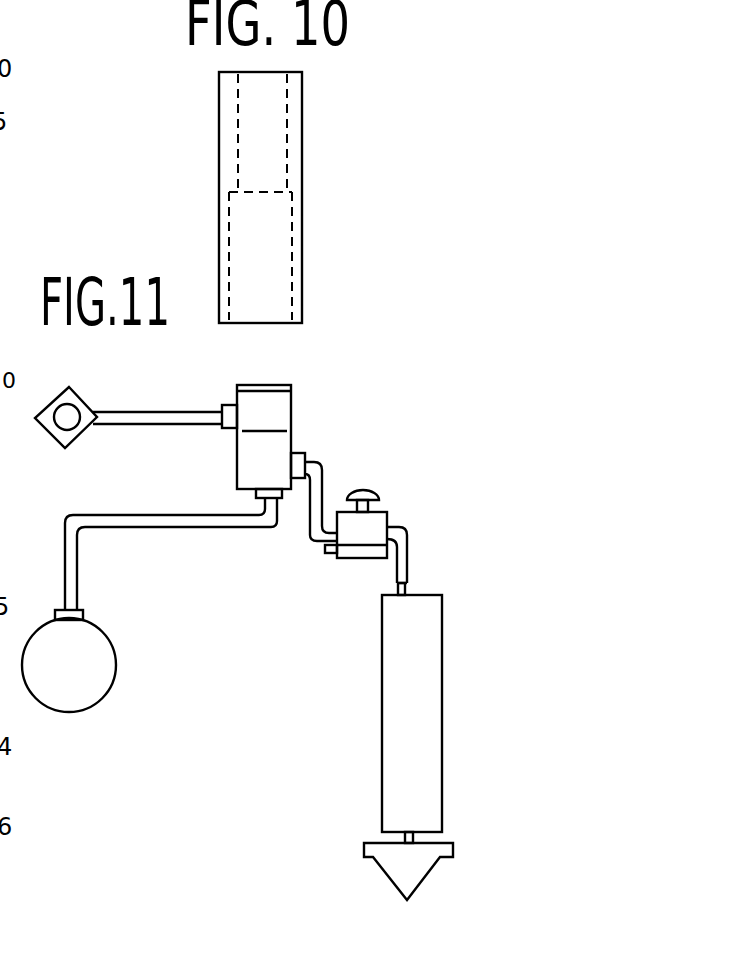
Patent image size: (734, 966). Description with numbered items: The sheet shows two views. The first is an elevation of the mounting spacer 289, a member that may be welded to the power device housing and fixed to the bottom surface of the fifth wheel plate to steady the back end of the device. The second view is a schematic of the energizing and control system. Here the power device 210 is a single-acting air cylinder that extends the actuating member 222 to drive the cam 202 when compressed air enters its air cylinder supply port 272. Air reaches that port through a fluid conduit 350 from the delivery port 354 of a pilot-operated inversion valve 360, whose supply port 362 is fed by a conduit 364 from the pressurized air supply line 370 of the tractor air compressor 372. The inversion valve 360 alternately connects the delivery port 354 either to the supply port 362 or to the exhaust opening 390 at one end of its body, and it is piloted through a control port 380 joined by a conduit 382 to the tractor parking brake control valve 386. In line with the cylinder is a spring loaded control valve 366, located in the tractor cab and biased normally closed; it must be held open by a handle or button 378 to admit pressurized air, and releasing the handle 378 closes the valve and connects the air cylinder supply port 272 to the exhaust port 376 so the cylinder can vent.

In FIG. 10, the mounting spacer 289 is at (293, 172).
In FIG. 11, the tractor parking brake control valve 386 is at (56, 396).
In FIG. 11, the conduit 382 is at (129, 415).
In FIG. 11, the control port 380 is at (230, 420).
In FIG. 11, the inversion valve 360 is at (264, 437).
In FIG. 11, the exhaust opening 390 is at (292, 391).
In FIG. 11, the delivery port 354 is at (298, 452).
In FIG. 11, the fluid conduit 350 is at (324, 473).
In FIG. 11, the supply port 362 is at (258, 492).
In FIG. 11, the conduit 364 is at (103, 520).
In FIG. 11, the pressurized air supply line 370 is at (67, 570).
In FIG. 11, the tractor air compressor 372 is at (97, 642).
In FIG. 11, the spring loaded control valve 366 is at (362, 535).
In FIG. 11, the handle or button 378 is at (364, 490).
In FIG. 11, the exhaust port 376 is at (325, 549).
In FIG. 11, the air cylinder supply port 272 is at (406, 590).
In FIG. 11, the power device 210 is at (424, 700).
In FIG. 11, the actuating member 222 is at (405, 838).
In FIG. 11, the cam 202 is at (420, 866).